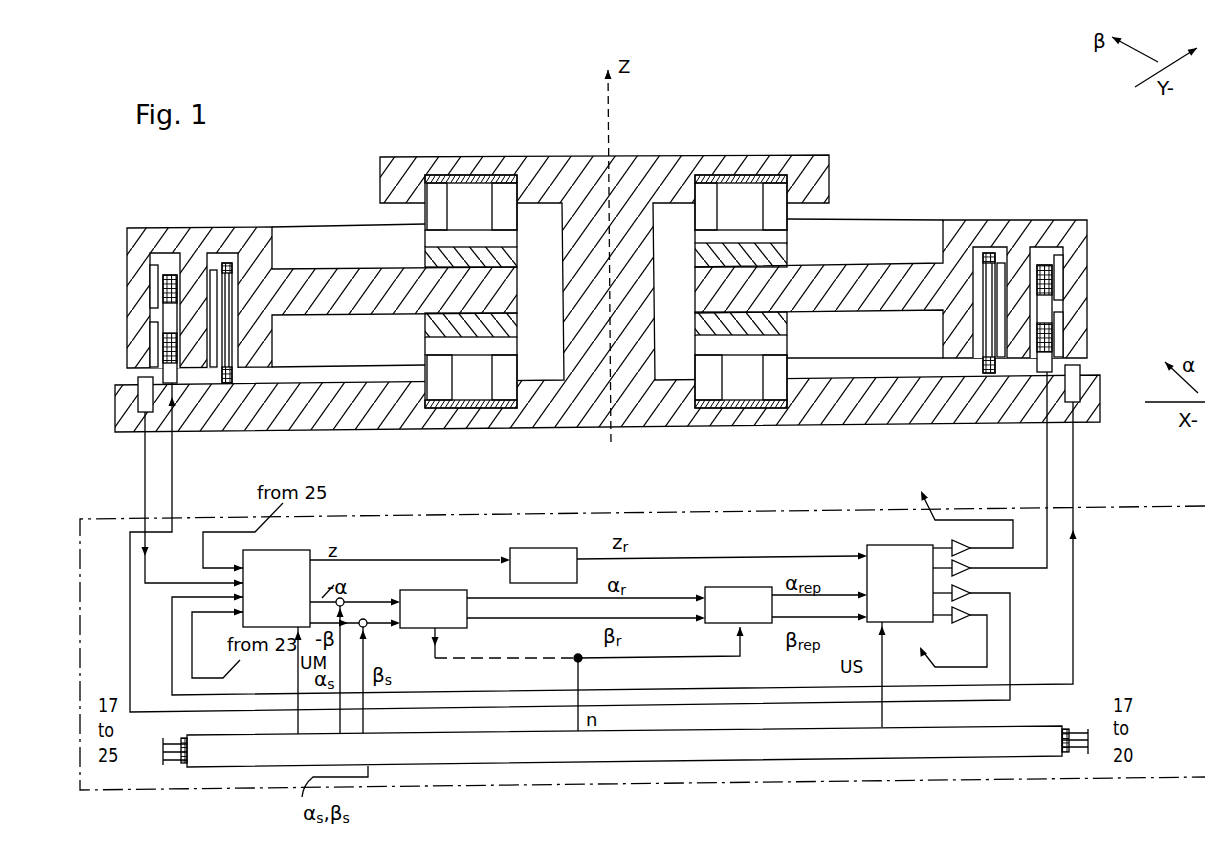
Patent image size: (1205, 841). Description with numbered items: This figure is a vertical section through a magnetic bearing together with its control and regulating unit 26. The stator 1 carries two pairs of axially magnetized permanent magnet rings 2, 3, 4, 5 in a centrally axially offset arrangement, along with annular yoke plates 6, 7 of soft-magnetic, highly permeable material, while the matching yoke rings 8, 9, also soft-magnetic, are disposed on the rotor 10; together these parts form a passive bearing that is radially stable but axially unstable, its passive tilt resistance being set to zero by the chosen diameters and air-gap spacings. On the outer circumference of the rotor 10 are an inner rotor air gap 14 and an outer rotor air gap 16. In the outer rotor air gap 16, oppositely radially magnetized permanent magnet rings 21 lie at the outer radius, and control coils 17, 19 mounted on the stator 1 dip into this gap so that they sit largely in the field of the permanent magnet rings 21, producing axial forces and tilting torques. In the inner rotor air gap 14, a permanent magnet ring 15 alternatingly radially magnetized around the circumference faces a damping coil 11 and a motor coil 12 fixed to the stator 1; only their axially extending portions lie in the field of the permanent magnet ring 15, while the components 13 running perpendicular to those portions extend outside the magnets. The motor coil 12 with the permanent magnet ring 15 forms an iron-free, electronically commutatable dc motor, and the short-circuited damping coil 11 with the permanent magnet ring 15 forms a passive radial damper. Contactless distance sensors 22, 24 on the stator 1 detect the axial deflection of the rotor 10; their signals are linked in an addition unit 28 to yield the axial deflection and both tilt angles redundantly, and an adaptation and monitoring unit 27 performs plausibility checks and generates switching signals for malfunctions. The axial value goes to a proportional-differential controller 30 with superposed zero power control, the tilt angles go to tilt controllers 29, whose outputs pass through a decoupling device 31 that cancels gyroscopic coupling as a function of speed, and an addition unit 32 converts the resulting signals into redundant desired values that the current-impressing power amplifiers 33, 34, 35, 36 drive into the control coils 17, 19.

The stator 1 is at (557, 136).
The permanent magnet ring 2 is at (499, 176).
The permanent magnet ring 3 is at (435, 177).
The permanent magnet ring 4 is at (512, 400).
The permanent magnet ring 5 is at (433, 400).
The annular yoke plate 6 is at (466, 177).
The annular yoke plate 7 is at (465, 408).
The yoke ring 8 is at (425, 331).
The yoke ring 9 is at (425, 256).
The rotor 10 is at (848, 257).
The damping coil 11 is at (240, 265).
The motor coil 12 is at (232, 287).
The components 13 is at (222, 258).
The inner rotor air gap 14 is at (217, 252).
The permanent magnet ring 15 is at (210, 280).
The outer rotor air gap 16 is at (172, 262).
The control coil 17 is at (1082, 252).
The control coil 19 is at (158, 250).
The permanent magnet ring 21 is at (153, 343).
The distance sensor 22 is at (1080, 370).
The distance sensor 24 is at (140, 378).
The control and regulating unit 26 is at (1161, 498).
The adaptation and monitoring unit 27 is at (1047, 734).
The addition unit 28 is at (289, 562).
The tilt controller 29 is at (437, 588).
The proportional-differential controller 30 is at (548, 563).
The decoupling device 31 is at (748, 588).
The addition unit 32 is at (872, 553).
The power amplifier 33 is at (951, 548).
The power amplifier 34 is at (972, 567).
The power amplifier 35 is at (972, 592).
The power amplifier 36 is at (972, 614).